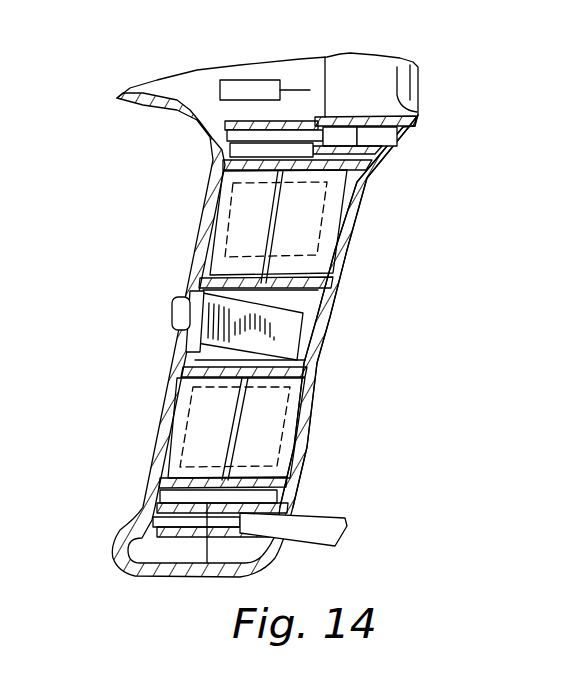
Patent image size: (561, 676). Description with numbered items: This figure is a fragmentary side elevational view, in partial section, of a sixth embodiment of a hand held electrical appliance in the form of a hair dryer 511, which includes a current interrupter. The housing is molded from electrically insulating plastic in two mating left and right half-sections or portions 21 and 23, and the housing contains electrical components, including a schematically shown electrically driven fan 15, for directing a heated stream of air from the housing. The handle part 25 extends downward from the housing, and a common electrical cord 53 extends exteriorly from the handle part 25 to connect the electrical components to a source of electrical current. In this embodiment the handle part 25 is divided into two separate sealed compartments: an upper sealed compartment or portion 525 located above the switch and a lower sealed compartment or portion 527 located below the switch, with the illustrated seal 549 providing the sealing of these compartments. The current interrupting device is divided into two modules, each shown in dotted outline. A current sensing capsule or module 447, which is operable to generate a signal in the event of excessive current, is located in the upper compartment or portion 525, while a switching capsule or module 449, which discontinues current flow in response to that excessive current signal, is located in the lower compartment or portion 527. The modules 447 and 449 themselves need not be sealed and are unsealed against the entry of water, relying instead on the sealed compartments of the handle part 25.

The electrically driven fan 15 is at (310, 4).
The housing half-section 21 is at (207, 213).
The housing half-section 23 is at (333, 280).
The handle part 25 is at (332, 317).
The current sensing capsule or module 447 is at (240, 193).
The switching capsule or module 449 is at (197, 423).
The hair dryer 511 is at (160, 313).
The upper sealed compartment or portion 525 is at (320, 228).
The lower sealed compartment or portion 527 is at (277, 437).
The seal 549 is at (280, 203).
The electrical cord 53 is at (340, 522).